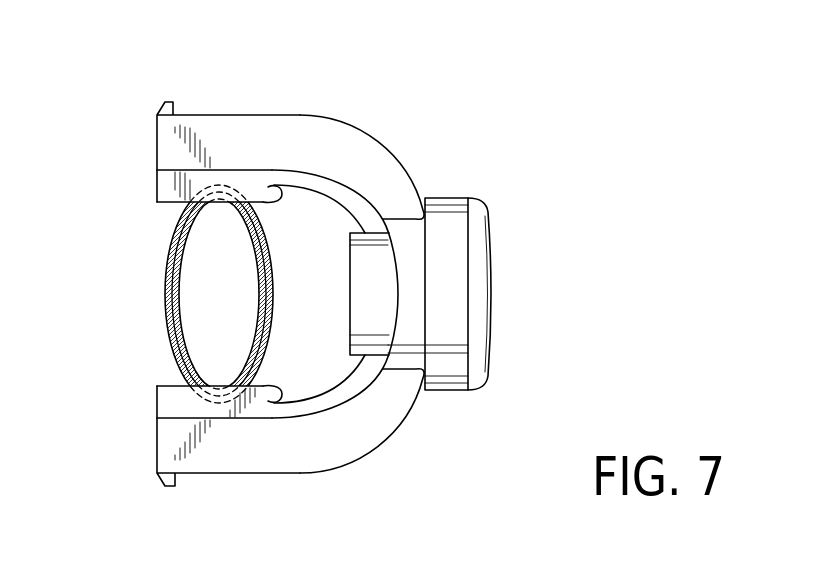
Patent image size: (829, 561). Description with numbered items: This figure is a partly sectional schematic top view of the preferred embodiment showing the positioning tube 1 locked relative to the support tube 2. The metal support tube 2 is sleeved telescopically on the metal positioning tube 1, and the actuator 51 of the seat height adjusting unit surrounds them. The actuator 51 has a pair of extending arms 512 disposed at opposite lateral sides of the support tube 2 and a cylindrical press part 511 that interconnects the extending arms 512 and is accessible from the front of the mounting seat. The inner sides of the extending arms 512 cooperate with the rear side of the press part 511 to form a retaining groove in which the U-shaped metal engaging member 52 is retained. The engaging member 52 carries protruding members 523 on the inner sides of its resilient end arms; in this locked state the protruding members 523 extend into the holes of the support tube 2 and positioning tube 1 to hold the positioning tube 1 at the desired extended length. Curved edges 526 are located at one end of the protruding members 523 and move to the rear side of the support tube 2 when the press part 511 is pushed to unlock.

The positioning tube 1 is at (168, 280).
The support tube 2 is at (168, 306).
The actuator 51 is at (440, 110).
The engaging member 52 is at (351, 172).
The press part 511 is at (485, 275).
The extending arms 512 is at (305, 140).
The protruding members 523 is at (178, 188).
The curved edges 526 is at (264, 186).